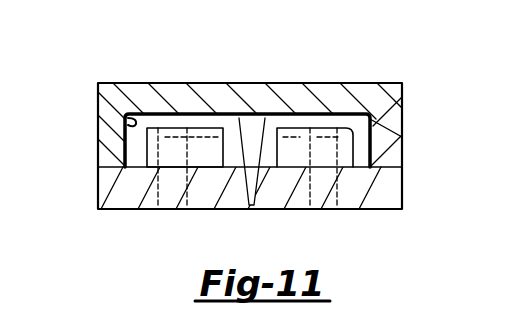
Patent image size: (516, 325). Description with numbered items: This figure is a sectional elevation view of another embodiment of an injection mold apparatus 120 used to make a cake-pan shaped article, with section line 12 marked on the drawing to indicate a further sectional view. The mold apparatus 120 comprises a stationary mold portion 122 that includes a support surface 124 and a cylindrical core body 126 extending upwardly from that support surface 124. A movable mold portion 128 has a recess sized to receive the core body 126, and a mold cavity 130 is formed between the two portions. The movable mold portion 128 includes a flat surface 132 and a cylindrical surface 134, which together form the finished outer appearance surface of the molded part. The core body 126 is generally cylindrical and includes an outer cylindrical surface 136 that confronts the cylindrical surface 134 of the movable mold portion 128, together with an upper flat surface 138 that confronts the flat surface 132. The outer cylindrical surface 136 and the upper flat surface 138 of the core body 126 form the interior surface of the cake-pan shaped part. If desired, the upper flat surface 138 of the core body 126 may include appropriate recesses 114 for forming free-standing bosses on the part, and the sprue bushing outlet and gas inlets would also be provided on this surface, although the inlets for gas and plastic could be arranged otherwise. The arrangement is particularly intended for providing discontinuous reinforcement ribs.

The mold apparatus 120 is at (369, 78).
The stationary mold portion 122 is at (396, 182).
The support surface 124 is at (388, 169).
The cylindrical core body 126 is at (370, 142).
The movable mold portion 128 is at (399, 84).
The mold cavity 130 is at (299, 118).
The flat surface 132 is at (134, 117).
The cylindrical surface 134 is at (122, 111).
The outer cylindrical surface 136 is at (147, 150).
The upper flat surface 138 is at (211, 112).
The recesses 114 is at (178, 126).
The section line 12- 12 is at (45, 137).